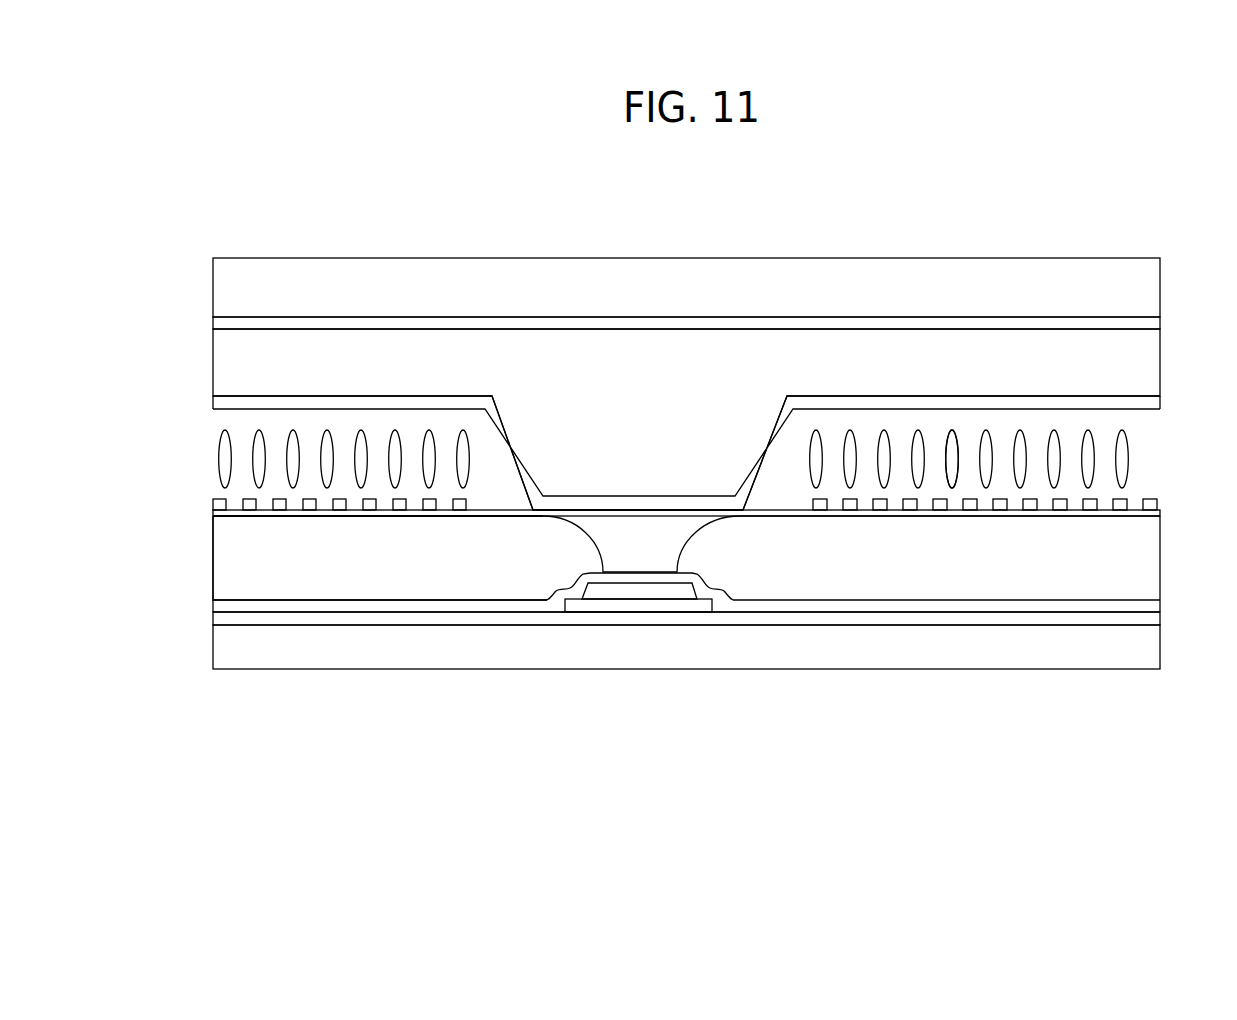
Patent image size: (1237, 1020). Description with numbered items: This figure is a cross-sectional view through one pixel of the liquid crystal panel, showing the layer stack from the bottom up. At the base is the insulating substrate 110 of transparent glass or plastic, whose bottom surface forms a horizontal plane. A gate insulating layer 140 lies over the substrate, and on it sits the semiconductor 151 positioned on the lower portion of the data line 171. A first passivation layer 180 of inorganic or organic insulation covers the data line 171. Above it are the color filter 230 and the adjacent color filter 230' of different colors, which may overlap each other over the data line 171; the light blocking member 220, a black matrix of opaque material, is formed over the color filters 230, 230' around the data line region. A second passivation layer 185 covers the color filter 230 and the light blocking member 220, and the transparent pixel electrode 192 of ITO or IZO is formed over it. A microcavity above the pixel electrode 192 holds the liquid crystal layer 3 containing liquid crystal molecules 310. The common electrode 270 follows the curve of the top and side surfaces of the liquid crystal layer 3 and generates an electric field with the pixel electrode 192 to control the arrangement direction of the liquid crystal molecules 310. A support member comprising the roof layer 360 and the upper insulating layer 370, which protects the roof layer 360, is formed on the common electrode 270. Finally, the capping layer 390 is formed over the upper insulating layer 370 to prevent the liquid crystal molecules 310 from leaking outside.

The insulating substrate 110 is at (795, 647).
The gate insulating layer 140 is at (1142, 620).
The semiconductor 151 is at (678, 605).
The data line 171 is at (613, 592).
The first passivation layer 180 is at (1142, 605).
The second passivation layer 185 is at (1150, 513).
The pixel electrode 192 is at (1150, 503).
The light blocking member 220 is at (620, 535).
The color filter 230 is at (719, 558).
The color filter 230' is at (347, 558).
The common electrode 270 is at (1142, 402).
The liquid crystal layer 3 is at (1158, 459).
The liquid crystal molecules 310 is at (953, 457).
The roof layer 360 is at (1137, 352).
The upper insulating layer 370 is at (1137, 323).
The capping layer 390 is at (1137, 280).